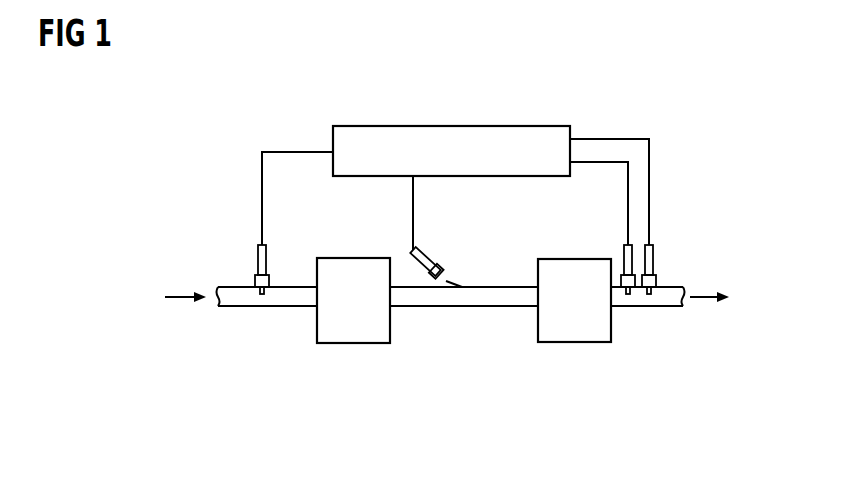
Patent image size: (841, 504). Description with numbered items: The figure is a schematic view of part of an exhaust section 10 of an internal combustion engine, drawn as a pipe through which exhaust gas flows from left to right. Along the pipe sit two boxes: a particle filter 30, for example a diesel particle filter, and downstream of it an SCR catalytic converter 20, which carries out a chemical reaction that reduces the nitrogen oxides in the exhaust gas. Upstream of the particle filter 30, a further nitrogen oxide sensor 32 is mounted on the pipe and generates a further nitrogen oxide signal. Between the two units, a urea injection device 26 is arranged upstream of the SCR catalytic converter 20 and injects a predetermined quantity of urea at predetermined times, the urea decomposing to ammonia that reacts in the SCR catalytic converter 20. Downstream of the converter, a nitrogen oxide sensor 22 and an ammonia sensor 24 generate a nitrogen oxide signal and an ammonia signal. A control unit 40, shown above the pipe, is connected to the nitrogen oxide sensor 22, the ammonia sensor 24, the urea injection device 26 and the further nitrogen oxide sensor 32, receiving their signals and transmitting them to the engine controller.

The exhaust section 10 is at (194, 162).
The SCR catalytic converter 20 is at (575, 335).
The nitrogen oxide sensor 22 is at (636, 292).
The ammonia sensor 24 is at (657, 282).
The urea injection device 26 is at (444, 275).
The particle filter 30 is at (354, 335).
The further nitrogen oxide sensor 32 is at (255, 282).
The control unit 40 is at (510, 170).